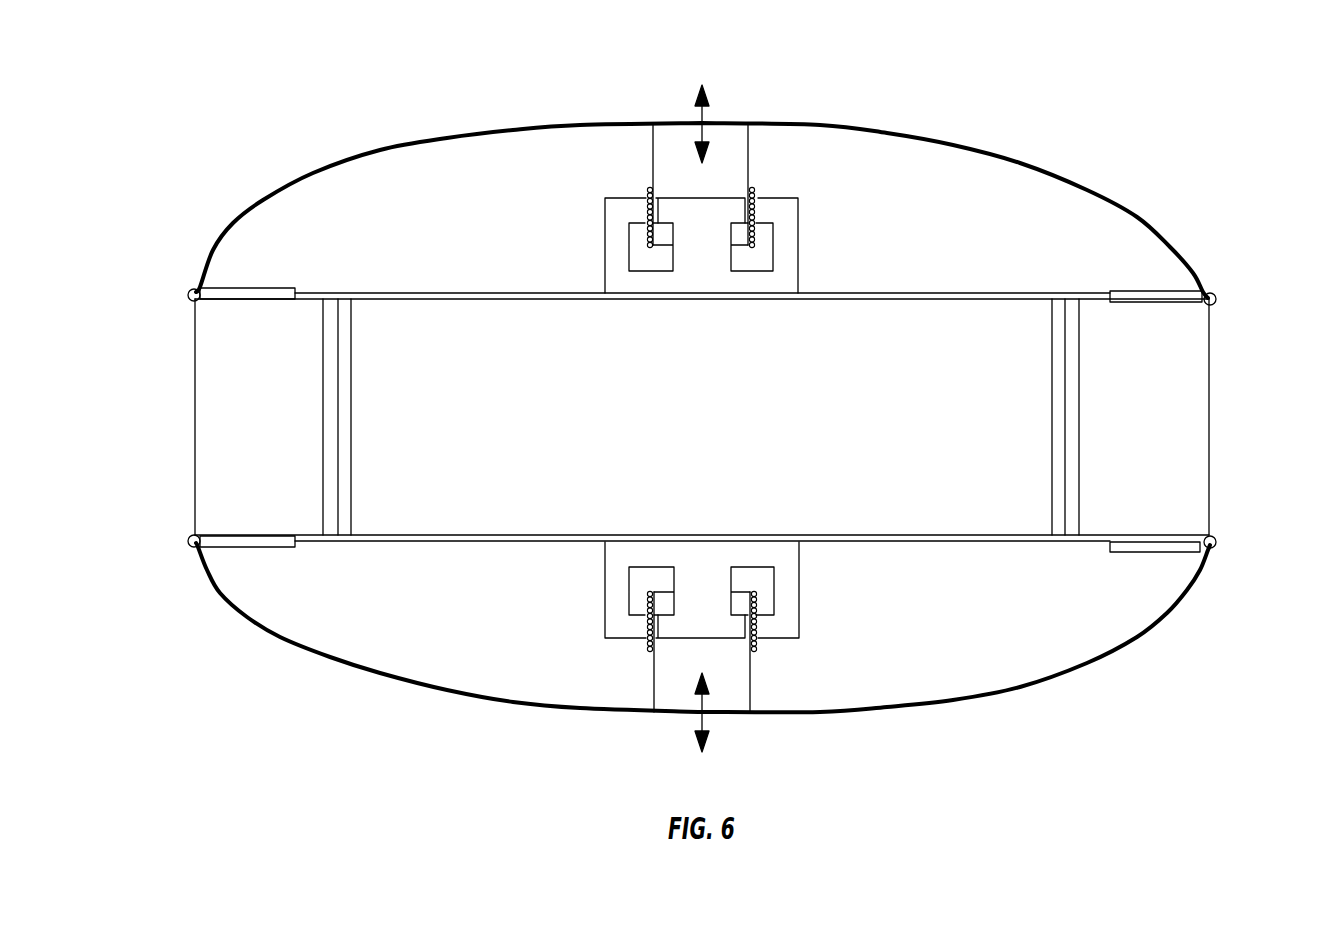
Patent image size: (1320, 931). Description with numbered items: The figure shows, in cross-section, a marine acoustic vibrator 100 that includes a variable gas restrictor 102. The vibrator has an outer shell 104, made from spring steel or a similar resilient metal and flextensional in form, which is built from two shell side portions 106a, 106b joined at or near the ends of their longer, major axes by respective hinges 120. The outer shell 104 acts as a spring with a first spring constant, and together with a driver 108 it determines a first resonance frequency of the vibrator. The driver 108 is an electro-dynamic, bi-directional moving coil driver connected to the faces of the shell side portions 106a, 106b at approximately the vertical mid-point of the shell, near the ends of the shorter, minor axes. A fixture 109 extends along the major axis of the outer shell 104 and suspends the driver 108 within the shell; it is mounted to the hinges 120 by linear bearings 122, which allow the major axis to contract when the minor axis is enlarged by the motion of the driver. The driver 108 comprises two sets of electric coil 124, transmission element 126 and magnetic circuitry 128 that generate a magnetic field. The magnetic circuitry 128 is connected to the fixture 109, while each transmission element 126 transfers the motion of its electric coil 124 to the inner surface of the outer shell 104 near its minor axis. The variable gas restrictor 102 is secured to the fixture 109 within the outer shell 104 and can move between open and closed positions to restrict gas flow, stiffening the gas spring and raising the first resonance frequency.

The marine acoustic vibrator 100 is at (1060, 98).
The variable gas restrictor 102 is at (353, 392).
The outer shell 104 is at (939, 143).
The shell side portion 106a is at (1037, 164).
The shell side portion 106b is at (1037, 672).
The driver 108 is at (821, 207).
The fixture 109 is at (621, 299).
The hinges 120 is at (187, 296).
The linear bearings 122 is at (247, 287).
The electric coil 124 is at (754, 188).
The transmission element 126 is at (652, 143).
The magnetic circuitry 128 is at (800, 573).